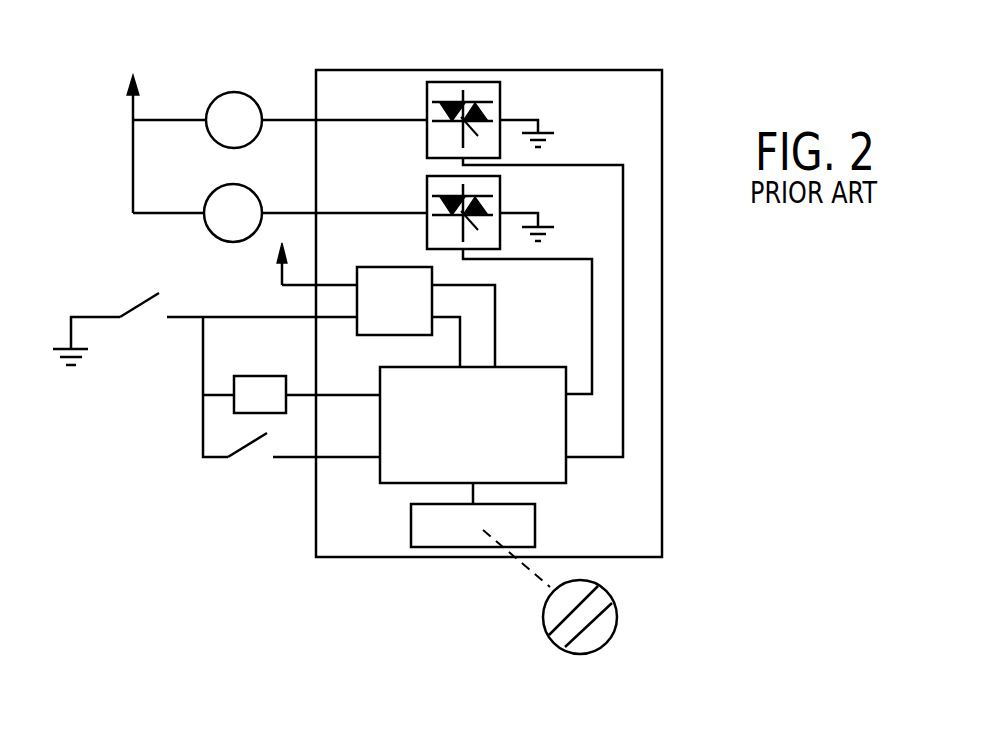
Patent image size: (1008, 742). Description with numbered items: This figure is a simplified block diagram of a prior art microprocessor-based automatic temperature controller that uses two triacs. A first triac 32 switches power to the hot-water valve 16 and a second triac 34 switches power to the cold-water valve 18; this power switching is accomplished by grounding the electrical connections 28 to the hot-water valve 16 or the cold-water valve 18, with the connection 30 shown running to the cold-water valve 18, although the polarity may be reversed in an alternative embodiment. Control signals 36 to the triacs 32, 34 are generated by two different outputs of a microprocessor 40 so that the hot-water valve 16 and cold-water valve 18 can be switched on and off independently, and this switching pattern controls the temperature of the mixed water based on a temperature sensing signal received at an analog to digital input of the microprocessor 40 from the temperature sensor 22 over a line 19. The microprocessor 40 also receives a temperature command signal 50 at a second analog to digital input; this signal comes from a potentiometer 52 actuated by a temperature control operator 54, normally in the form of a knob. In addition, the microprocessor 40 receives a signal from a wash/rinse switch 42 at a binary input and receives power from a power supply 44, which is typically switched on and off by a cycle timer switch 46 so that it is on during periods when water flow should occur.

The hot-water valve 16 is at (222, 133).
The cold-water valve 18 is at (221, 226).
The line 19 is at (299, 398).
The temperature sensor 22 is at (260, 376).
The electrical connections 28 is at (292, 117).
The conductor 30 is at (282, 216).
The first triac 32 is at (463, 82).
The second triac 34 is at (427, 191).
The control signals 36 is at (592, 327).
The microprocessor 40 is at (458, 407).
The wash/rinse switch 42 is at (254, 460).
The power supply 44 is at (381, 313).
The cycle timer switch 46 is at (150, 320).
The temperature command signal 50 is at (478, 492).
The potentiometer 52 is at (537, 525).
The temperature control operator 54 is at (544, 608).